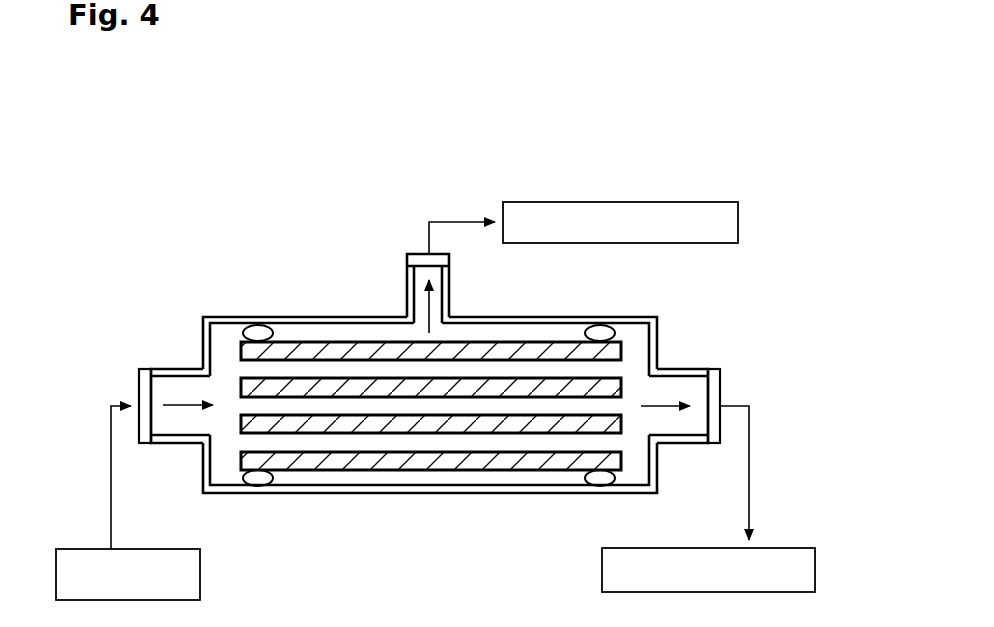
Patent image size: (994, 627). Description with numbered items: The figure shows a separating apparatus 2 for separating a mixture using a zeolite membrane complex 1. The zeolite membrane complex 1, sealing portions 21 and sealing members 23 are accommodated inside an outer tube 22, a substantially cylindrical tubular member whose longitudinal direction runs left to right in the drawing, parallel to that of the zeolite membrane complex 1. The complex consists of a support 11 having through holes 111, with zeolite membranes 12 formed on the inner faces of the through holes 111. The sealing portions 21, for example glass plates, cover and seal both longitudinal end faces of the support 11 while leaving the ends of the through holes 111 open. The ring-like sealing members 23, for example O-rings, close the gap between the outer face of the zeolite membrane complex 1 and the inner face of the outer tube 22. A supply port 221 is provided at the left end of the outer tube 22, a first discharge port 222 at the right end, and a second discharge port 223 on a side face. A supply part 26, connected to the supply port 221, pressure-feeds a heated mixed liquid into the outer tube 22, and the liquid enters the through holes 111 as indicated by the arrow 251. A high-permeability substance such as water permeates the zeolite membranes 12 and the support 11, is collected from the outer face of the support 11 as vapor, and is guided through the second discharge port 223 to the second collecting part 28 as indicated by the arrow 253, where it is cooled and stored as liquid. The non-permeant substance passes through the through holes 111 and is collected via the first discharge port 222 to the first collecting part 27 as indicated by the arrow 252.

The zeolite membrane complex 1 is at (416, 414).
The separating apparatus 2 is at (165, 197).
The support 11 is at (502, 470).
The zeolite membranes 12 is at (410, 398).
The through holes 111 is at (307, 408).
The sealing portions 21 is at (240, 353).
The outer tube 22 is at (523, 315).
The sealing members 23 is at (258, 330).
The supply port 221 is at (164, 377).
The first discharge port 222 is at (694, 376).
The second discharge port 223 is at (416, 277).
The arrow 251 is at (175, 410).
The arrow 252 is at (673, 408).
The arrow 253 is at (428, 305).
The supply part 26 is at (201, 573).
The first collecting part 27 is at (602, 572).
The second collecting part 28 is at (739, 222).